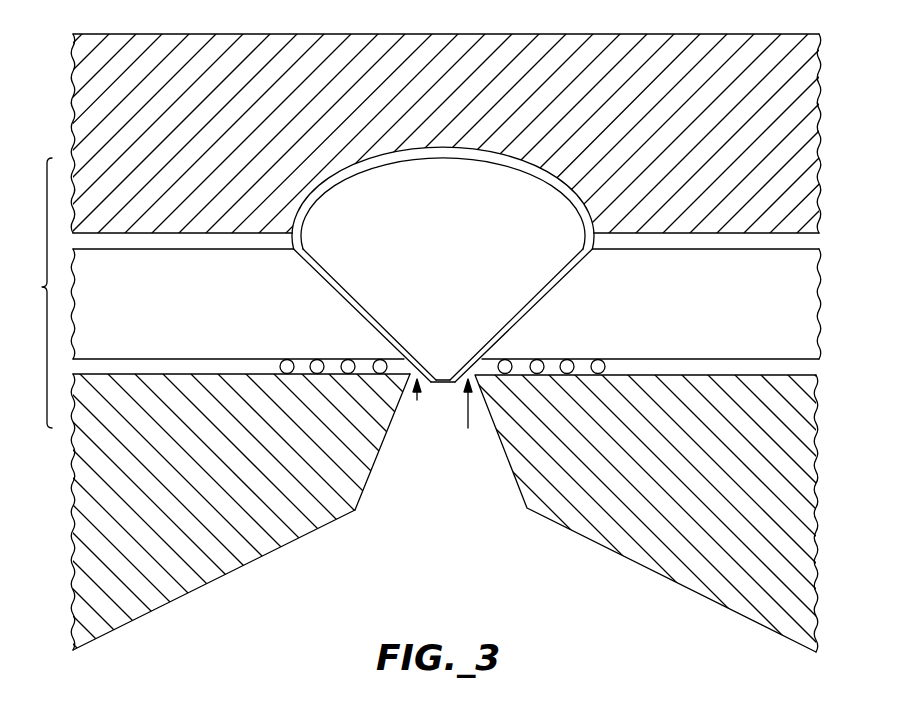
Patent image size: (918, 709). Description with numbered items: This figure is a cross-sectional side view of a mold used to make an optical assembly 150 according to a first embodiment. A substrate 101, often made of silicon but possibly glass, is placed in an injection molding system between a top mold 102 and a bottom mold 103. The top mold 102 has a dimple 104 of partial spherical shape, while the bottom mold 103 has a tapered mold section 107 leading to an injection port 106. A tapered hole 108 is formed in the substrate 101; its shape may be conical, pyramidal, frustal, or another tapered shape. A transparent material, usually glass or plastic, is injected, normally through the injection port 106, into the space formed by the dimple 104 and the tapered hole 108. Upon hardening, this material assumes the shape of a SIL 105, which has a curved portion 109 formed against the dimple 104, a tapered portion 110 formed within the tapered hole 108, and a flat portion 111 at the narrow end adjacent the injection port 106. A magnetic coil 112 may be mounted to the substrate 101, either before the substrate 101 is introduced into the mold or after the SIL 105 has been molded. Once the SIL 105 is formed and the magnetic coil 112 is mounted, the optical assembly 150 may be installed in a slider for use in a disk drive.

The substrate 101 is at (701, 295).
The top mold 102 is at (360, 36).
The bottom mold 103 is at (214, 572).
The dimple 104 is at (313, 196).
The SIL 105 is at (461, 268).
The injection port 106 is at (417, 400).
The tapered mold section 107 is at (377, 470).
The tapered hole 108 is at (336, 302).
The curved portion 109 is at (398, 165).
The tapered portion 110 is at (357, 304).
The flat portion 111 is at (435, 378).
The magnetic coil 112 is at (598, 359).
The optical assembly 150 is at (26, 293).